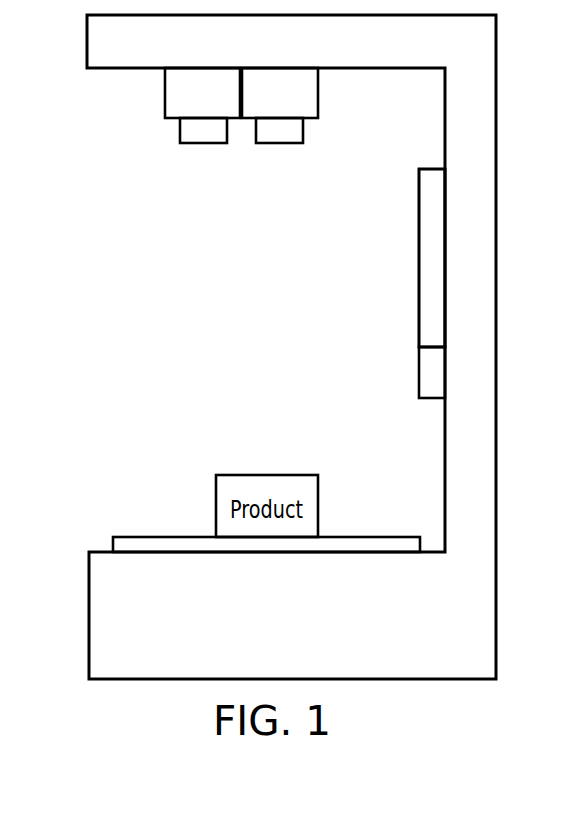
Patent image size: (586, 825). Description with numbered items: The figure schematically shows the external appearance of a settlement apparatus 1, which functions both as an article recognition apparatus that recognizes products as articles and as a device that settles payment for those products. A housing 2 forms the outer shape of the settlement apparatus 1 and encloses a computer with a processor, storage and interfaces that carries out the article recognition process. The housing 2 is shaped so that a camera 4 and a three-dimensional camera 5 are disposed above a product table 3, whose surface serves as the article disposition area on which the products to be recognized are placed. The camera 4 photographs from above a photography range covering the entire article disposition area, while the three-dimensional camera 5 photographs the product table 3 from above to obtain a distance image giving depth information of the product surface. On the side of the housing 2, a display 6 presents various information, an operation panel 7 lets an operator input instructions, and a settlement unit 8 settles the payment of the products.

The settlement apparatus 1 is at (95, 285).
The housing 2 is at (89, 630).
The product table 3 is at (163, 537).
The camera 4 is at (165, 108).
The 3D camera 5 is at (318, 107).
The display 6 is at (419, 270).
The operation panel 7 is at (432, 258).
The settlement unit 8 is at (419, 375).